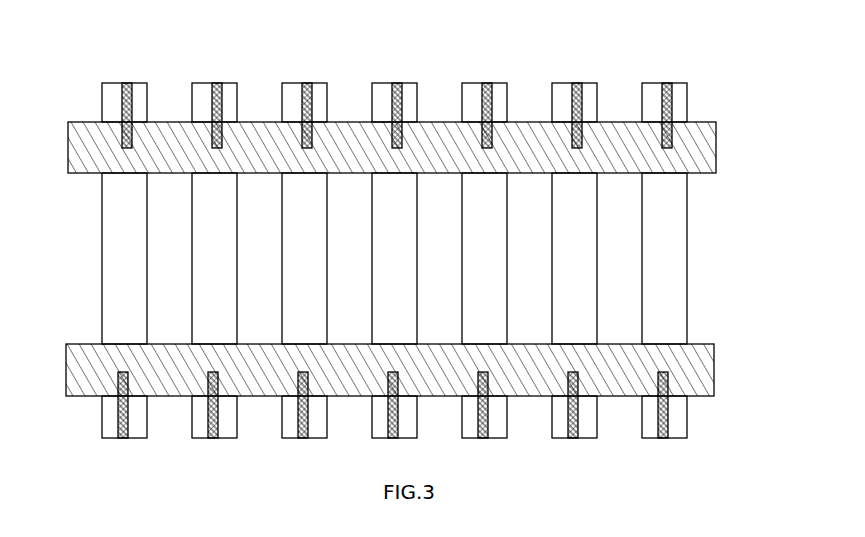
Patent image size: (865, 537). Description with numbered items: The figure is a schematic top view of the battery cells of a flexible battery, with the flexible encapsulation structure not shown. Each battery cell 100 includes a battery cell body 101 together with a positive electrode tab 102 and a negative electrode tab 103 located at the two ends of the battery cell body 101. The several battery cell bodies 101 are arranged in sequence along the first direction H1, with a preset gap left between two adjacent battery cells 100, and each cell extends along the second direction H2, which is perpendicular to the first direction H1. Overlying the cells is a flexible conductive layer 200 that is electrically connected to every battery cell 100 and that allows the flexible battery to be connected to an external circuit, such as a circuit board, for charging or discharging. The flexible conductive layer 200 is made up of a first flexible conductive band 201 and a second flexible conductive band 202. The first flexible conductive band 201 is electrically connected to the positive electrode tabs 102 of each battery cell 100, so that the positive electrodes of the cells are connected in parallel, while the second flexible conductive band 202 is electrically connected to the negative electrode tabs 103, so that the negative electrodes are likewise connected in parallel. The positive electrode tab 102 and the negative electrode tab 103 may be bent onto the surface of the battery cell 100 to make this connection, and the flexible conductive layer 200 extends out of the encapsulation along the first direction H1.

The battery cell 100 is at (431, 253).
The battery cell body 101 is at (120, 265).
The positive electrode tab 102 is at (124, 104).
The negative electrode tab 103 is at (119, 432).
The flexible conductive layer 200 is at (414, 259).
The first flexible conductive band 201 is at (84, 159).
The second flexible conductive band 202 is at (93, 387).
The first direction H1 is at (643, 63).
The second direction H2 is at (755, 183).